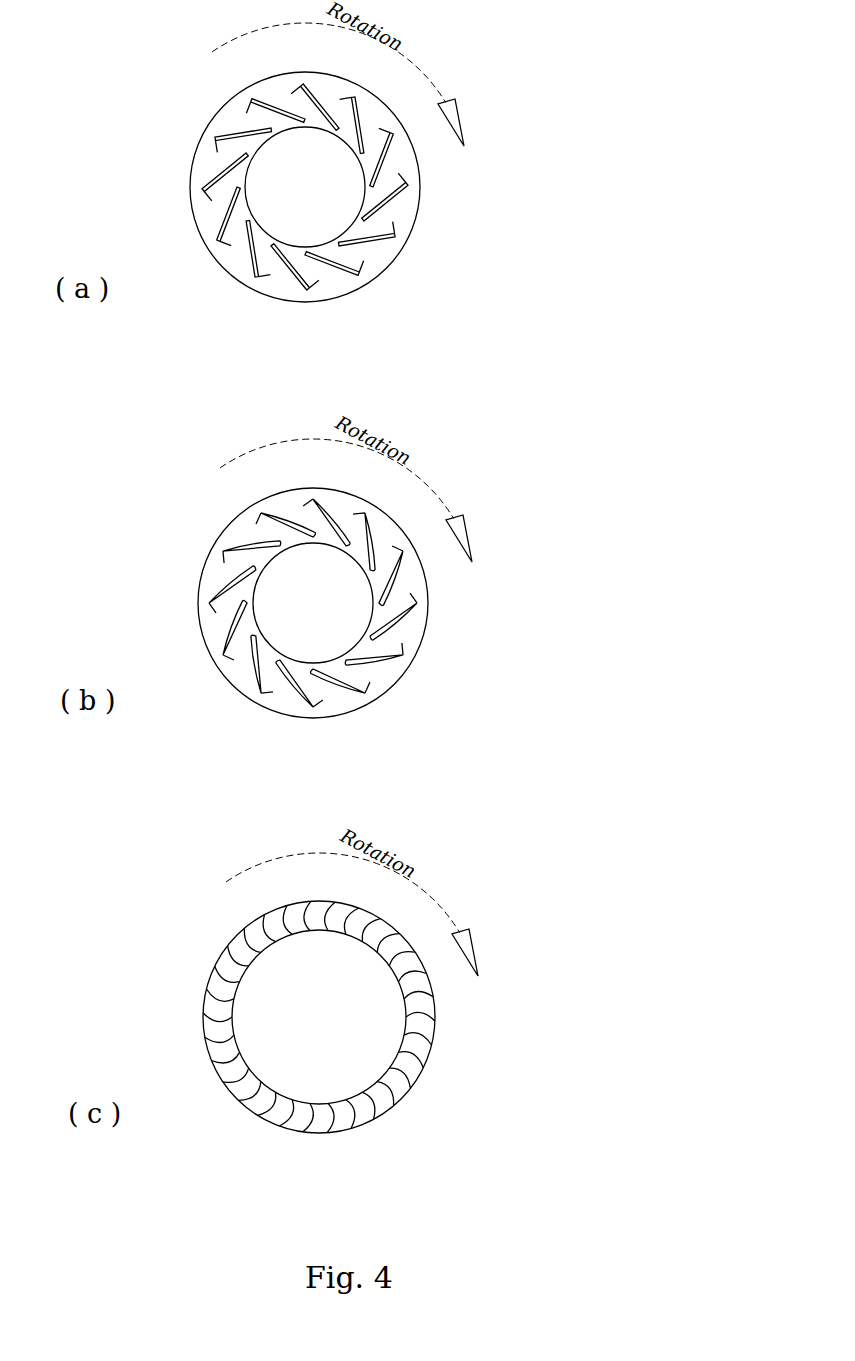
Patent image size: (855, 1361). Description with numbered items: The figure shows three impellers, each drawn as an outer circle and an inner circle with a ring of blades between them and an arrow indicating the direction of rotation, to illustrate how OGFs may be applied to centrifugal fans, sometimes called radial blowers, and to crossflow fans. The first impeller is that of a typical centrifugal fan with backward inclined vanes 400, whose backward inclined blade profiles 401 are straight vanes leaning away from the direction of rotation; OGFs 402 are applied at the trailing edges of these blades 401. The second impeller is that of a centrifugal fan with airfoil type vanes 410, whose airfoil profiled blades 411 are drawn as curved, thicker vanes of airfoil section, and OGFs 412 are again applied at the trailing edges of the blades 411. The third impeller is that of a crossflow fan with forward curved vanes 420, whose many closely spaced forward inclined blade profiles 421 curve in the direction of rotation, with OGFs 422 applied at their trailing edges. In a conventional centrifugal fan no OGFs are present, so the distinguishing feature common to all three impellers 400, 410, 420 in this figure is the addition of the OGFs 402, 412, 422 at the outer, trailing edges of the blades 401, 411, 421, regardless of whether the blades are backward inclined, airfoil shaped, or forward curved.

The backward inclined type impeller 400 is at (205, 96).
The backward inclined blade profiles 401 is at (268, 133).
The OGFs 402 is at (216, 137).
The airfoil type impeller 410 is at (210, 509).
The airfoil profiled blades 411 is at (275, 547).
The OGFs 412 is at (220, 552).
The crossflow fan impeller with forward curved vanes 420 is at (217, 923).
The forward inclined blade profiles 421 is at (220, 956).
The OGFs 422 is at (248, 972).